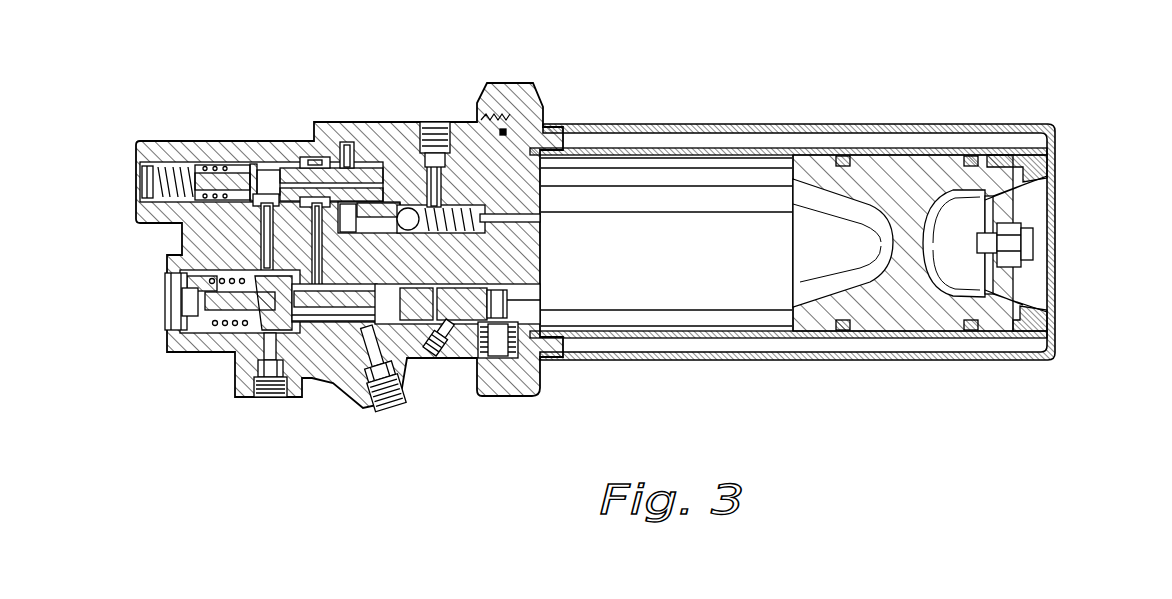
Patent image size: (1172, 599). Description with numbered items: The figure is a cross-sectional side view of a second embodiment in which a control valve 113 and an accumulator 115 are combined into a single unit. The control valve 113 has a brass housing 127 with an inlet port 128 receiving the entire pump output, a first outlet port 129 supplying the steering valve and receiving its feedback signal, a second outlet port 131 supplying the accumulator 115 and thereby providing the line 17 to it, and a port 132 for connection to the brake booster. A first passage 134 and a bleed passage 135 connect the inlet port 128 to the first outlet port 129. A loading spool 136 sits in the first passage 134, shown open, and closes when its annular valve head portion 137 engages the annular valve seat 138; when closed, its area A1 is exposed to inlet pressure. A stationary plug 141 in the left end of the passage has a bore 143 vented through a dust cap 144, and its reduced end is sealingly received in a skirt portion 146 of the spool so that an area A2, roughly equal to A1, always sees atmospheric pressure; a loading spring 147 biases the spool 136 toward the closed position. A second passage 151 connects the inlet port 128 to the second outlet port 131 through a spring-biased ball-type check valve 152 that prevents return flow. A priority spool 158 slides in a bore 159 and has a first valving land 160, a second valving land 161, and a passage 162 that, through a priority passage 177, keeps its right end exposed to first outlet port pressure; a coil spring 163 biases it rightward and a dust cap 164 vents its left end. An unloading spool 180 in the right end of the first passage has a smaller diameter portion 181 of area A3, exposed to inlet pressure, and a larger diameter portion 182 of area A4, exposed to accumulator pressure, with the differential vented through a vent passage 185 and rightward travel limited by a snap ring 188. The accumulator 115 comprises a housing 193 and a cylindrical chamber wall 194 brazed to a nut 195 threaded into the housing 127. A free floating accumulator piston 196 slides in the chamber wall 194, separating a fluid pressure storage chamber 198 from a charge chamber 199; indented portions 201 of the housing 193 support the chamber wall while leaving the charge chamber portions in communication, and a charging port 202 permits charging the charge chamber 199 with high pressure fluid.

The control valve 113 is at (410, 118).
The accumulator 115 is at (760, 123).
The housing 127 is at (388, 134).
The inlet port 128 is at (363, 408).
The first outlet port 129 is at (268, 400).
The second outlet port 131 is at (544, 240).
The port 132 is at (440, 121).
The first passage 134 is at (366, 291).
The bleed passage 135 is at (346, 335).
The loading spool 136 is at (222, 245).
The annular valve head portion 137 is at (299, 242).
The annular valve seat 138 is at (307, 356).
The stationary plug 141 is at (182, 320).
The bore 143 is at (183, 305).
The dust cap 144 is at (183, 282).
The skirt portion 146 is at (218, 330).
The loading spring 147 is at (219, 337).
The second passage 151 is at (370, 232).
The ball-type check valve 152 is at (417, 206).
The priority spool 158 is at (250, 160).
The bore 159 is at (214, 162).
The first valving land 160 is at (292, 166).
The second valving land 161 is at (357, 160).
The passage 162 is at (318, 158).
The coil spring 163 is at (170, 160).
The dust cap 164 is at (141, 184).
The line 17 is at (630, 210).
The priority passage 177 is at (261, 226).
The unloading spool 180 is at (505, 298).
The smaller diameter portion 181 is at (422, 336).
The larger diameter portion 182 is at (486, 340).
The vent passage 185 is at (440, 358).
The snap ring 188 is at (520, 322).
The housing 193 is at (878, 124).
The cylindrical chamber wall 194 is at (932, 148).
The nut 195 is at (512, 100).
The free floating accumulator piston 196 is at (1015, 162).
The fluid pressure storage chamber 198 is at (737, 253).
The charge chamber 199 is at (945, 258).
The indented portions 201 is at (1055, 177).
The charging port 202 is at (1036, 244).
The lateral cross-sectional area A1 is at (241, 348).
The area A2 is at (180, 258).
The lateral cross-sectional area A3 is at (440, 286).
The lateral cross-sectional area A4 is at (484, 288).